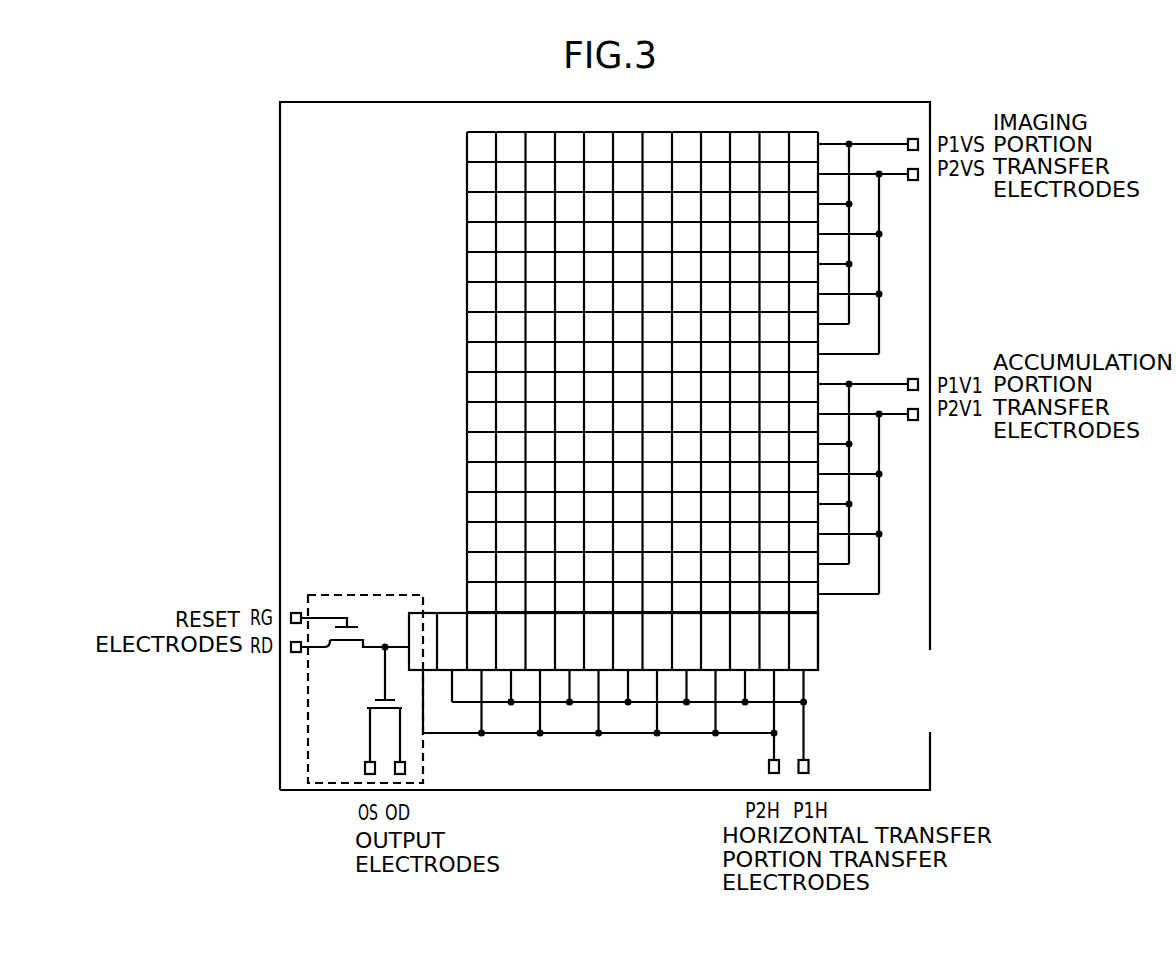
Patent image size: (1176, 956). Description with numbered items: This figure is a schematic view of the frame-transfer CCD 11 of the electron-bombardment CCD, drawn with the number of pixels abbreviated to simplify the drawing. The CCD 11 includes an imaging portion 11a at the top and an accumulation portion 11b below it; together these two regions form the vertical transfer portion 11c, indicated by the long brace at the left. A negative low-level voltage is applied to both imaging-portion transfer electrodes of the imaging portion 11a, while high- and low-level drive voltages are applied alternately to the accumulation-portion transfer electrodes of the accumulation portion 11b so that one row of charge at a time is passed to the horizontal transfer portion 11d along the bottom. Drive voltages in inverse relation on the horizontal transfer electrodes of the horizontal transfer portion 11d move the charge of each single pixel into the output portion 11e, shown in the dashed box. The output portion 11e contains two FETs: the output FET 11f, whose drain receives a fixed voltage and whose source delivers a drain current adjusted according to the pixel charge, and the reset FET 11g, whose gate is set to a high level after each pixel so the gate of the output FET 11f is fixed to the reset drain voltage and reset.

The CCD 11 is at (938, 569).
The imaging portion 11a is at (462, 135).
The accumulation portion 11b is at (462, 368).
The vertical transfer portion 11c is at (417, 401).
The horizontal transfer portion 11d is at (824, 612).
The output portion 11e is at (310, 738).
The output FET 11f is at (365, 705).
The reset FET 11g is at (335, 657).